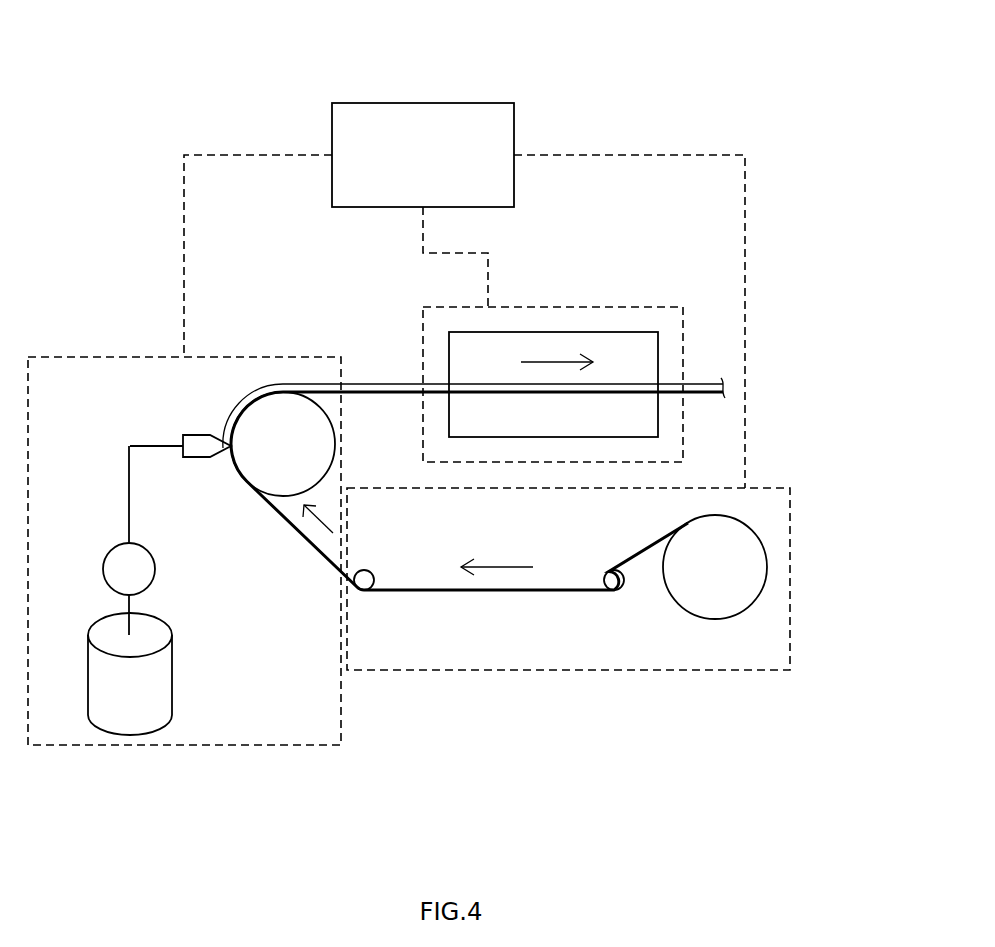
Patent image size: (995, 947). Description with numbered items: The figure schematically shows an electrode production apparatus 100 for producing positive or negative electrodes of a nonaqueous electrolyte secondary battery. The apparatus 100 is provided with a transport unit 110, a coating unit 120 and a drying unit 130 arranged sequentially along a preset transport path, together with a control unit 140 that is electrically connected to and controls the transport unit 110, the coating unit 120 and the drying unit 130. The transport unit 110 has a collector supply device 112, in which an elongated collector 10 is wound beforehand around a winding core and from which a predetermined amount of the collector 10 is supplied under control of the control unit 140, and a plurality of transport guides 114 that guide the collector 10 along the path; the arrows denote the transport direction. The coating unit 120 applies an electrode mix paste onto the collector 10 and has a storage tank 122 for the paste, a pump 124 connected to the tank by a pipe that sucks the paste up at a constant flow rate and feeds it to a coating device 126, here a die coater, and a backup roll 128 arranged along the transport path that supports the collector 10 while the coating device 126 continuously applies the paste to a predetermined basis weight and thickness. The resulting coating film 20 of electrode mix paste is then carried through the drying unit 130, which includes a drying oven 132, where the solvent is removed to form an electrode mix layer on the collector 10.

The electrode production apparatus 100 is at (117, 56).
The control unit 140 is at (420, 103).
The drying unit 130 is at (556, 306).
The drying oven 132 is at (624, 332).
The coating unit 120 is at (183, 748).
The storage tank 122 is at (172, 675).
The pump 124 is at (107, 553).
The coating device 126 is at (190, 461).
The backup roll 128 is at (248, 462).
The transport unit 110 is at (792, 498).
The collector supply device 112 is at (768, 560).
The transport guides 114 is at (367, 578).
The collector 10 is at (509, 593).
The coating film 20 is at (365, 382).